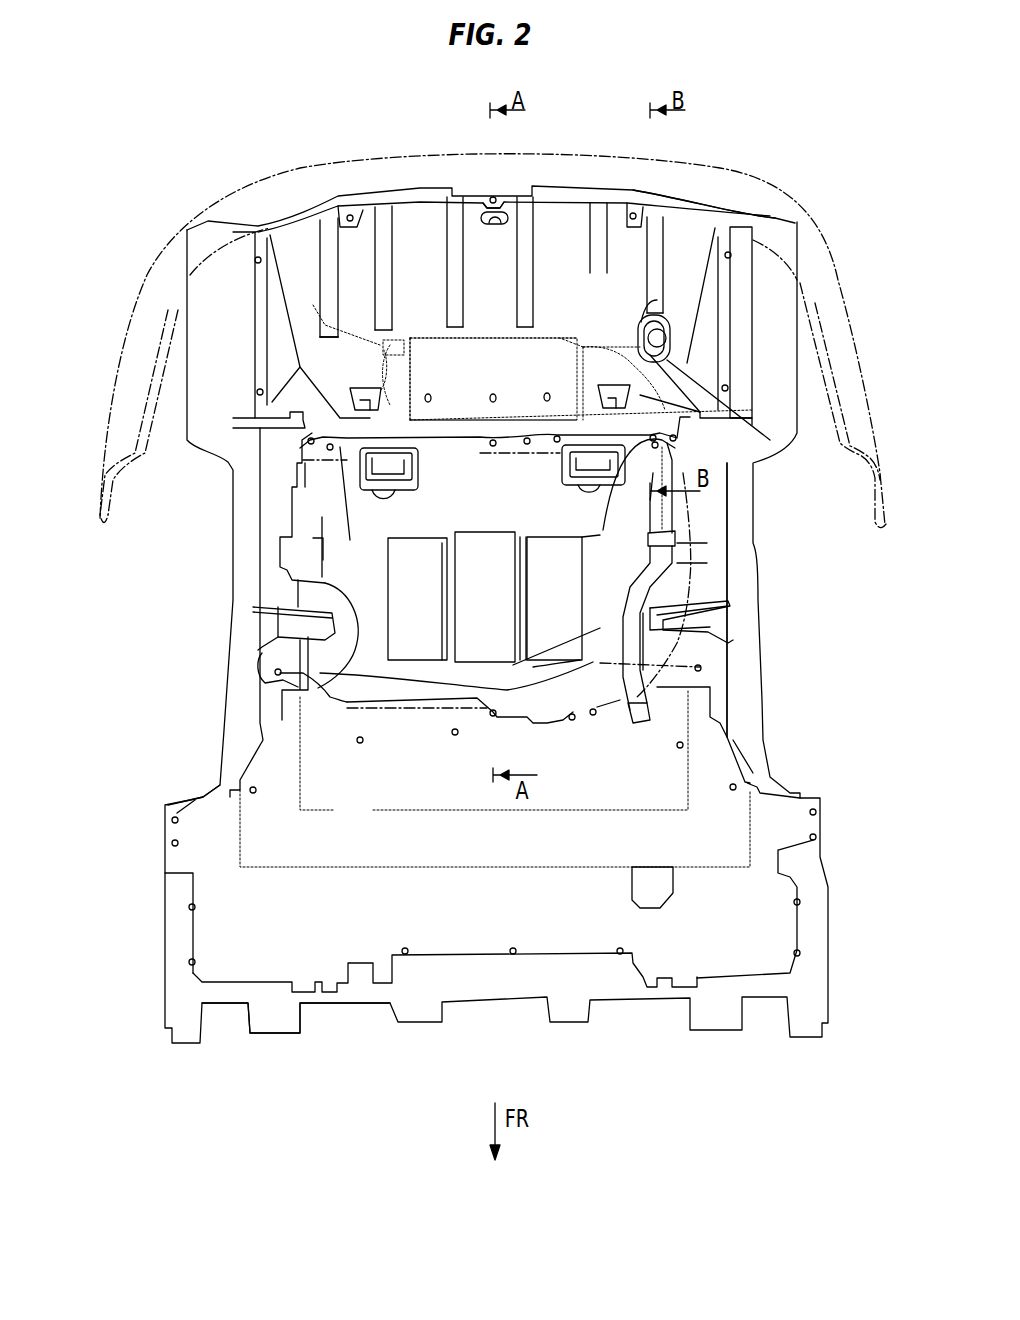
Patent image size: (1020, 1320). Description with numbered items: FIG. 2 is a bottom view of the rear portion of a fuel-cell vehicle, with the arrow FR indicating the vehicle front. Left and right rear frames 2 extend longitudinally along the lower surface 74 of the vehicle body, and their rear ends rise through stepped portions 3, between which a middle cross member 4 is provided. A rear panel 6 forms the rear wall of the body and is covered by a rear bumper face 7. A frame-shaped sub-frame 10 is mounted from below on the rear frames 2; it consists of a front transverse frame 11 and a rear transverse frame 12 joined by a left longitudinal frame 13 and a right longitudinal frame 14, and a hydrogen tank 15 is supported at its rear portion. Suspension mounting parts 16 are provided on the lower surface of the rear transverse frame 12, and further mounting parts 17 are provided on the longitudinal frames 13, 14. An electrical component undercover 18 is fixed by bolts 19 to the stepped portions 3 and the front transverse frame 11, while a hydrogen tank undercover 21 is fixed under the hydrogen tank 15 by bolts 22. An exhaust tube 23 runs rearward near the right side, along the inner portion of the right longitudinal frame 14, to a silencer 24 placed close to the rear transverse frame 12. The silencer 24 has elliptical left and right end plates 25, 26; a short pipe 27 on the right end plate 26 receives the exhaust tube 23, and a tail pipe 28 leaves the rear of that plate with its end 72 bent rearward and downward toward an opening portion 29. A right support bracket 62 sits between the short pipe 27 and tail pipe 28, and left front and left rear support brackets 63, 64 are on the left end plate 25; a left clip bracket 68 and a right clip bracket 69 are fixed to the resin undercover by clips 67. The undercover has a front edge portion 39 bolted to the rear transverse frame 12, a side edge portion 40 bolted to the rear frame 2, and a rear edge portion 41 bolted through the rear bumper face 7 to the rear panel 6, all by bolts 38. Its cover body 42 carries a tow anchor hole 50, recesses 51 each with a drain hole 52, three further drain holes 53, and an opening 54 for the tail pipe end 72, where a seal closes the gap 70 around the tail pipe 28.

The rear frame 2 is at (232, 540).
The stepped portion 3 is at (208, 802).
The middle cross member 4 is at (610, 998).
The rear panel 6 is at (396, 190).
The rear bumper face 7 is at (594, 160).
The sub-frame 10 is at (706, 586).
The front transverse frame 11 is at (420, 858).
The rear transverse frame 12 is at (474, 430).
The left longitudinal frame 13 is at (270, 574).
The right longitudinal frame 14 is at (710, 518).
The hydrogen tank 15 is at (673, 643).
The mounting part 16 is at (443, 480).
The mounting part 17 is at (298, 620).
The electrical component undercover 18 is at (431, 826).
The bolt 19 is at (172, 843).
The hydrogen tank undercover 21 is at (456, 597).
The bolt 22 is at (332, 452).
The exhaust tube 23 is at (622, 597).
The silencer 24 is at (503, 338).
The left end plate 25 is at (432, 338).
The right end plate 26 is at (580, 354).
The short pipe 27 is at (600, 409).
The tail pipe 28 is at (603, 362).
The opening portion 29 is at (641, 322).
The bolt 38 is at (257, 257).
The front edge portion 39 is at (485, 442).
The side edge portion 40 is at (225, 323).
The rear edge portion 41 is at (478, 203).
The cover body 42 is at (353, 258).
The tow anchor hole 50 is at (500, 226).
The recess 51 is at (365, 389).
The drain hole 52 is at (342, 400).
The drain hole 53 is at (428, 394).
The opening 54 is at (660, 332).
The right support bracket 62 is at (596, 393).
The left front support bracket 63 is at (367, 366).
The left rear support bracket 64 is at (332, 314).
The clip 67 is at (393, 347).
The left clip bracket 68 is at (395, 342).
The right clip bracket 69 is at (590, 340).
The gap 70 is at (683, 326).
The end 72 is at (729, 414).
The lower surface 74 is at (158, 182).